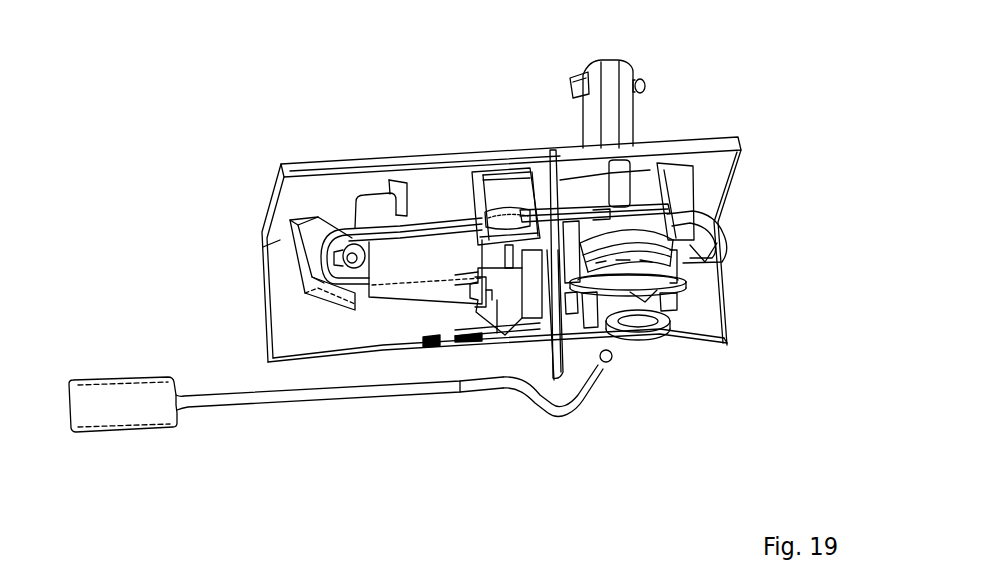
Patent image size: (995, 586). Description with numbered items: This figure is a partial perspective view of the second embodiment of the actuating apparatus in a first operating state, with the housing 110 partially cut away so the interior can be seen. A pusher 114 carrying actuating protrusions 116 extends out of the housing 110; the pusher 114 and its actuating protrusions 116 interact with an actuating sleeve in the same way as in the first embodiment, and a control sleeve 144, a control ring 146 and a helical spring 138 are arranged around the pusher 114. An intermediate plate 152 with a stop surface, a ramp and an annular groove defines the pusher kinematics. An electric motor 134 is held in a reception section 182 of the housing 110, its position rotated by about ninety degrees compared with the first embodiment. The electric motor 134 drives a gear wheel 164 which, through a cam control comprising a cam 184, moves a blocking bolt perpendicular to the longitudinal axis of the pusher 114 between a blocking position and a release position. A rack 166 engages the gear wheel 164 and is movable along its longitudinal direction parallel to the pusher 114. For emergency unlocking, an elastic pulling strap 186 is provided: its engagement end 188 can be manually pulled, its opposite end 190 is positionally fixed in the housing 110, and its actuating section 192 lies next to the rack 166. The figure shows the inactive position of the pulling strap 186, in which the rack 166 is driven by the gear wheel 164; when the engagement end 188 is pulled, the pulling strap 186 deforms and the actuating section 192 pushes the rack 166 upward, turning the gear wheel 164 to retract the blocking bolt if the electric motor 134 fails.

The housing 110 is at (305, 160).
The pusher 114 is at (640, 119).
The actuating protrusions 116 is at (580, 76).
The electric motor 134 is at (422, 257).
The helical spring 138 is at (648, 332).
The control sleeve 144 is at (661, 295).
The control ring 146 is at (680, 289).
The intermediate plate 152 is at (592, 207).
The gear wheel 164 is at (551, 372).
The rack 166 is at (551, 378).
The reception section 182 is at (377, 207).
The cam 184 is at (545, 343).
The pulling strap 186 is at (242, 400).
The engagement end 188 is at (122, 417).
The opposite end 190 is at (610, 357).
The actuating section 192 is at (575, 386).